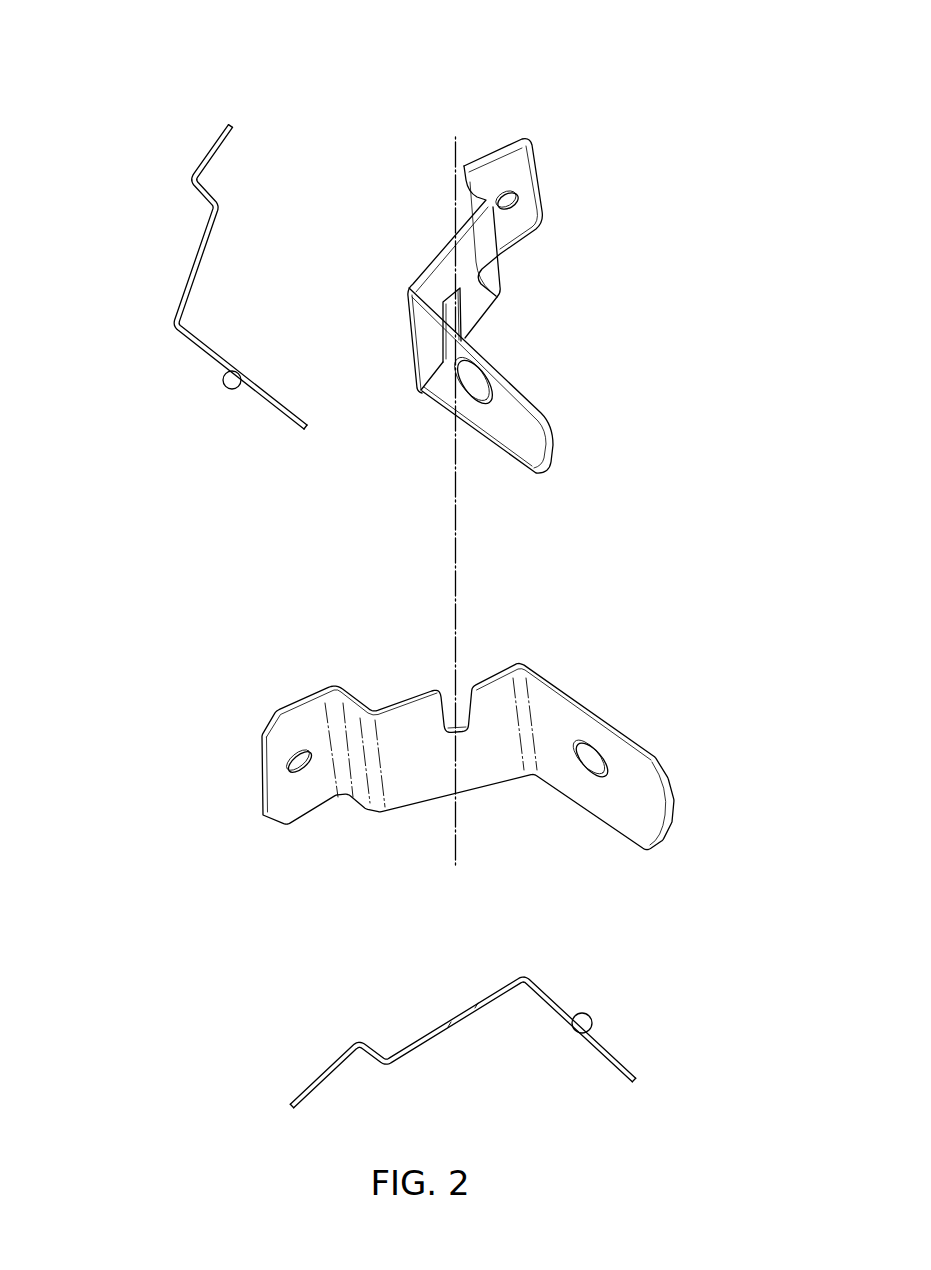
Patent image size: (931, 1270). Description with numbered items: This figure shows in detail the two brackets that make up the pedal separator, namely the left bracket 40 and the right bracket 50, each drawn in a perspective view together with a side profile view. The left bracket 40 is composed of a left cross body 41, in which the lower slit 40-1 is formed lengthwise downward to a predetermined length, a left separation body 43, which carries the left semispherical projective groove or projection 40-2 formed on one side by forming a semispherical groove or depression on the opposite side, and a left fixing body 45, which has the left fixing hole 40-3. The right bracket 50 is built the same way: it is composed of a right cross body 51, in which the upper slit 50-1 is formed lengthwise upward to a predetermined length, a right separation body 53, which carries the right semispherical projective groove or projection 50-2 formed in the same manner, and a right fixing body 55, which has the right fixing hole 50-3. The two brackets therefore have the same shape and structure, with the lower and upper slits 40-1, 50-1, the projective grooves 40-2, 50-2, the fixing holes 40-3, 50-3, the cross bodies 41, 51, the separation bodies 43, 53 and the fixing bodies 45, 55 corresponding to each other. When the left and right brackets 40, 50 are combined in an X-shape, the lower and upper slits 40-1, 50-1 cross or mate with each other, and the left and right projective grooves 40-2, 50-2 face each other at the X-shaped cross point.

The left bracket 40 is at (612, 243).
The left cross body 41 is at (196, 267).
The left separation body 43 is at (269, 407).
The left fixing body 45 is at (209, 152).
The lower slit 40-1 is at (448, 308).
The left semispherical projective groove or projection 40-2 is at (225, 385).
The left fixing hole 40-3 is at (512, 203).
The right bracket 50 is at (648, 702).
The right cross body 51 is at (441, 835).
The right separation body 53 is at (571, 858).
The right fixing body 55 is at (304, 868).
The upper slit 50-1 is at (448, 700).
The right semispherical projective groove or projection 50-2 is at (593, 762).
The right fixing hole 50-3 is at (303, 771).